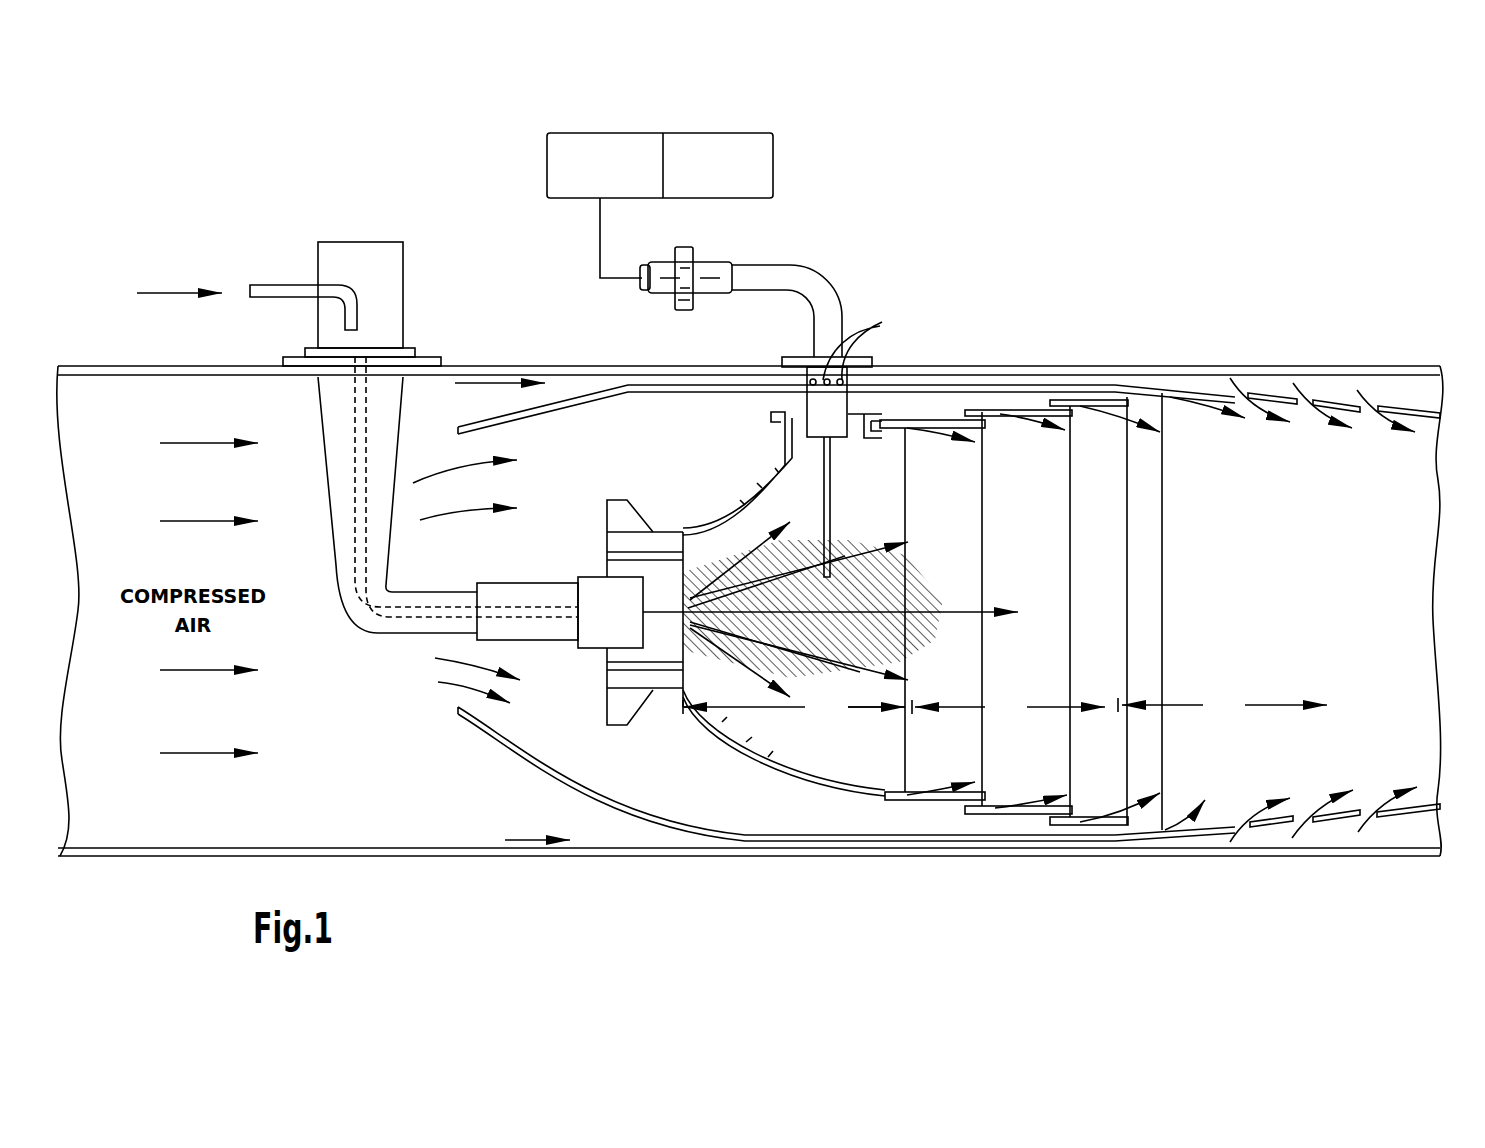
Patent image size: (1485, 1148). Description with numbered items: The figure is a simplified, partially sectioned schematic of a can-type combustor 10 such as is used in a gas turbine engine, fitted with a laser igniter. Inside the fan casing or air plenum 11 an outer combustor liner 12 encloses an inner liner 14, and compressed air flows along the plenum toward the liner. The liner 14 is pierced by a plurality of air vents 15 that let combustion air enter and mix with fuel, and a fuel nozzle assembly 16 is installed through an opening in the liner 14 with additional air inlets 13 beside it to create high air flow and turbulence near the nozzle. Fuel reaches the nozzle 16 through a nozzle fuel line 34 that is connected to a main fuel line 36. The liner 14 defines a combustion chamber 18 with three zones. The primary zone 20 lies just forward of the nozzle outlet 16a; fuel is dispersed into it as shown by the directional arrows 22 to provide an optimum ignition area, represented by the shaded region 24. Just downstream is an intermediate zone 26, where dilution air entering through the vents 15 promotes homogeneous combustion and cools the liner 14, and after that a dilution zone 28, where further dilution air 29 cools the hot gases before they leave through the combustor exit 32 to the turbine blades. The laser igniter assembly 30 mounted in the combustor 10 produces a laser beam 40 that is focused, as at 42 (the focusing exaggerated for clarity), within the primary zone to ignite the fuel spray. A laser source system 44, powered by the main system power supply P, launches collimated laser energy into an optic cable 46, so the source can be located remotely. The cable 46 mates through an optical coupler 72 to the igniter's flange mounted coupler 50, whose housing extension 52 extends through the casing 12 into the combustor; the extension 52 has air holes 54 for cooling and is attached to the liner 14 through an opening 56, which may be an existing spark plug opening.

The combustor 10 is at (470, 800).
The fan casing 11 is at (118, 365).
The outer combustor liner 12 is at (587, 392).
The air inlets 13 is at (598, 567).
The inner liner 14 is at (822, 778).
The air vents 15 is at (748, 728).
The fuel nozzle assembly 16 is at (587, 527).
The nozzle outlet 16a is at (651, 594).
The combustion chamber 18 is at (1112, 632).
The primary zone 20 is at (794, 707).
The directional arrows 22 is at (990, 610).
The shaded region 24 is at (932, 598).
The intermediate zone 26 is at (1008, 707).
The dilution zone 28 is at (1222, 705).
The dilution air 29 is at (1405, 430).
The laser igniter assembly 30 is at (1032, 213).
The combustor exit 32 is at (1432, 628).
The nozzle fuel line 34 is at (362, 322).
The main fuel line 36 is at (152, 293).
The laser beam 40 is at (833, 452).
The beam focus 42 is at (847, 590).
The laser source system 44 is at (633, 133).
The optic cable 46 is at (598, 222).
The flange mounted coupler 50 is at (800, 345).
The housing extension 52 is at (818, 420).
The air holes 54 is at (865, 344).
The opening 56 is at (793, 418).
The optical coupler 72 is at (708, 246).
The main system power supply P is at (740, 133).